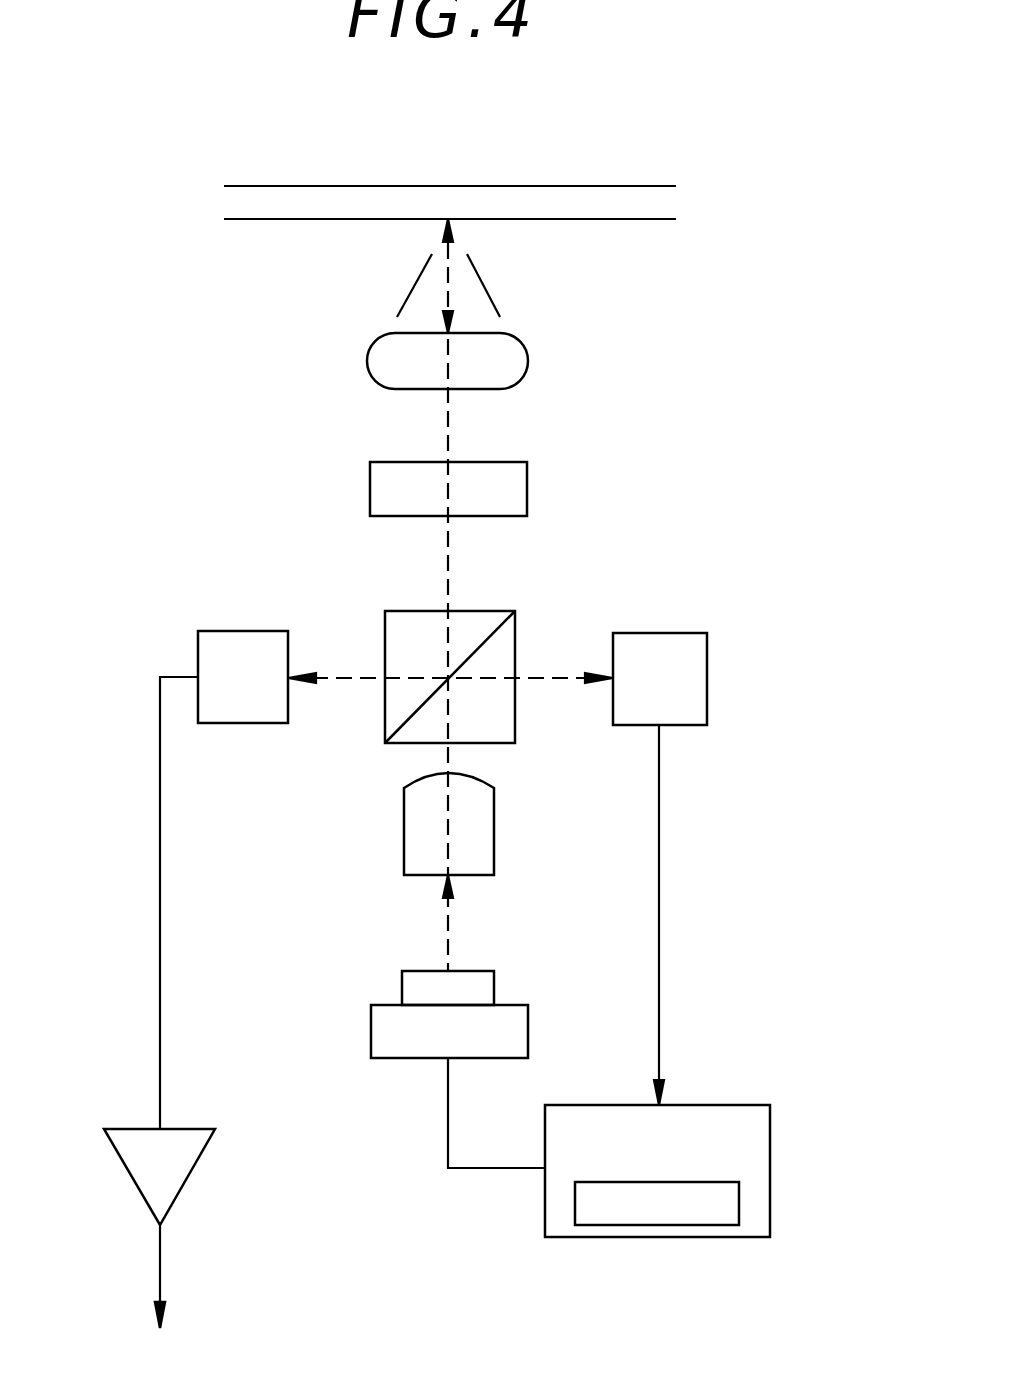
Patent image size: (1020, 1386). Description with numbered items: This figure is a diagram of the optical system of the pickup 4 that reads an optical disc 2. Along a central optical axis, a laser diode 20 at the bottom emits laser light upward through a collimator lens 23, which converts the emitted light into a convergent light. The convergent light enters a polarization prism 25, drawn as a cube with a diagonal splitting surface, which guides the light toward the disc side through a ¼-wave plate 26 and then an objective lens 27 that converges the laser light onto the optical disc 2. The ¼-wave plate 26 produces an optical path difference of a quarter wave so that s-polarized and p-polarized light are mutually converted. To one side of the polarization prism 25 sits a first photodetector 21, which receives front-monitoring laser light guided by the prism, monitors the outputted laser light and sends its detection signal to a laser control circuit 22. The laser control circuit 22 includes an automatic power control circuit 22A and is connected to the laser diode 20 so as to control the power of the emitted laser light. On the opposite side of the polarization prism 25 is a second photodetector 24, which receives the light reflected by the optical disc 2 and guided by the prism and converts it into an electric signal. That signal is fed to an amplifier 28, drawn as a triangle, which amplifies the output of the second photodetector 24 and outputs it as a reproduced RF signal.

The optical disc 2 is at (670, 209).
The pickup 4 is at (270, 424).
The laser diode 20 is at (372, 1005).
The first photodetector 21 is at (625, 632).
The laser control circuit 22 is at (702, 1105).
The automatic power control circuit 22A is at (697, 1237).
The collimator lens 23 is at (404, 845).
The second photodetector 24 is at (212, 630).
The polarization prism 25 is at (385, 723).
The ¼-wave plate 26 is at (527, 489).
The objective lens 27 is at (528, 353).
The amplifier 28 is at (188, 1182).